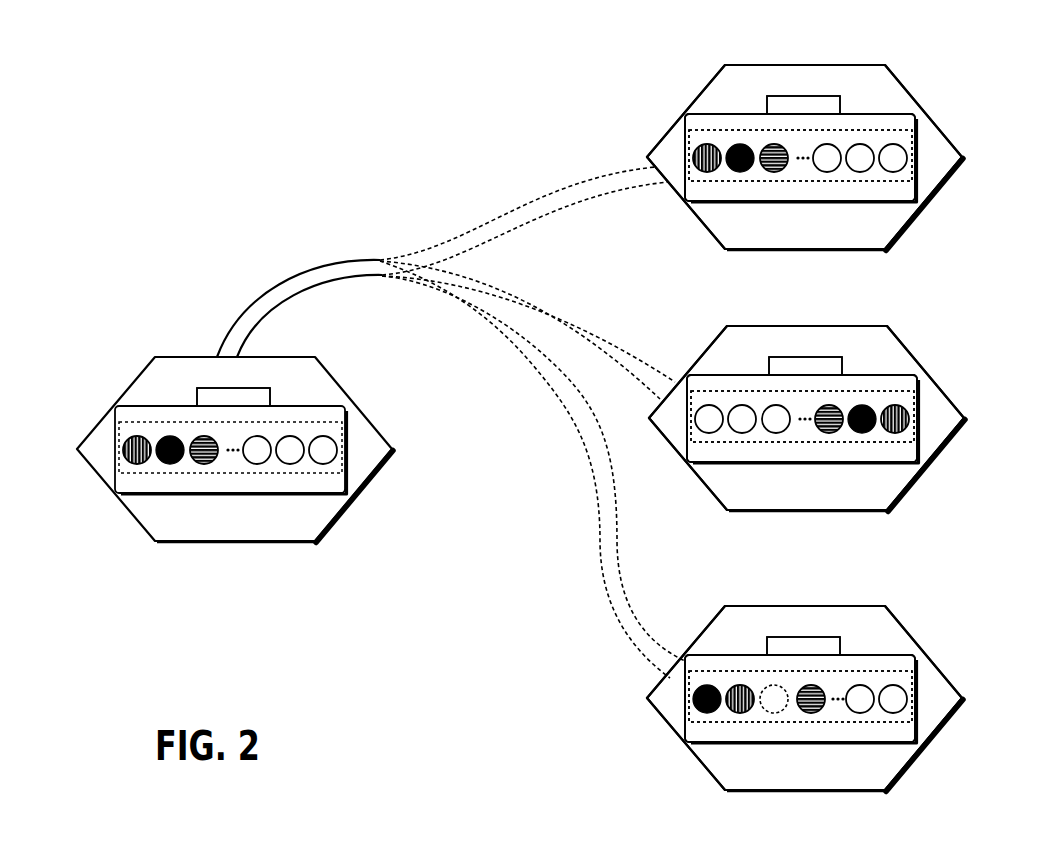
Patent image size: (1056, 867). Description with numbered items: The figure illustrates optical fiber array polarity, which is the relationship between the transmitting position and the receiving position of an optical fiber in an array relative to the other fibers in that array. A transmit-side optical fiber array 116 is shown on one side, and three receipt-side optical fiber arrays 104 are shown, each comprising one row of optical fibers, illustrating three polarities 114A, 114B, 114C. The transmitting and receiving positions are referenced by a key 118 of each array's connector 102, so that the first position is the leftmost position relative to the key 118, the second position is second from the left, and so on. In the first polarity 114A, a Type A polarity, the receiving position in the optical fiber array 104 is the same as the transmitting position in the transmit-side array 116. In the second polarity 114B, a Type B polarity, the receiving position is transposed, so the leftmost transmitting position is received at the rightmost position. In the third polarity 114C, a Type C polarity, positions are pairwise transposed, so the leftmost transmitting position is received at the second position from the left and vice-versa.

The connector 102 is at (832, 427).
The optical fiber array 104 is at (829, 440).
The first polarity 114A is at (985, 119).
The second polarity 114B is at (957, 357).
The third polarity 114C is at (987, 627).
The transmit-side optical fiber array 116 is at (257, 461).
The key 118 is at (536, 343).